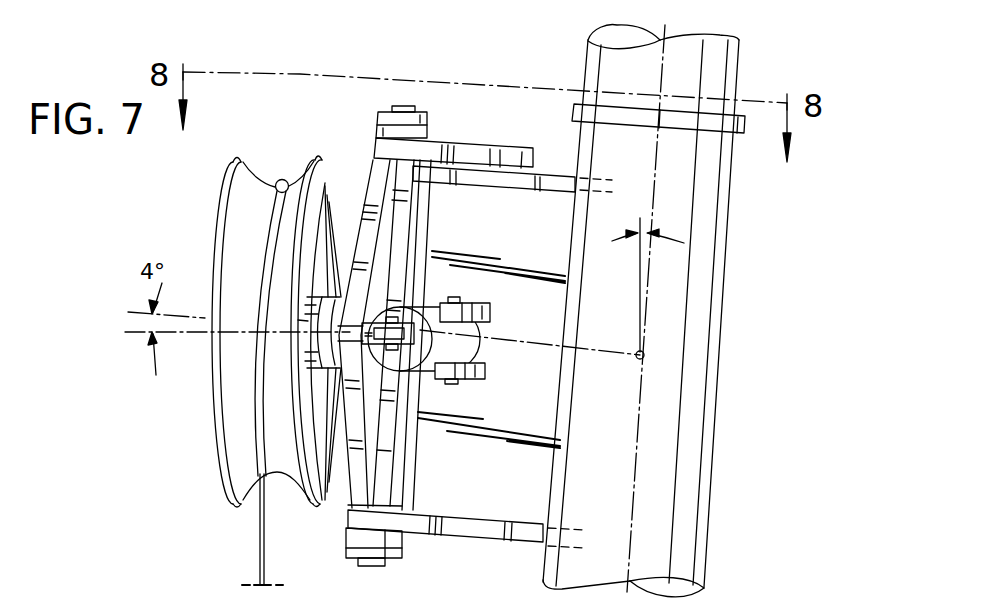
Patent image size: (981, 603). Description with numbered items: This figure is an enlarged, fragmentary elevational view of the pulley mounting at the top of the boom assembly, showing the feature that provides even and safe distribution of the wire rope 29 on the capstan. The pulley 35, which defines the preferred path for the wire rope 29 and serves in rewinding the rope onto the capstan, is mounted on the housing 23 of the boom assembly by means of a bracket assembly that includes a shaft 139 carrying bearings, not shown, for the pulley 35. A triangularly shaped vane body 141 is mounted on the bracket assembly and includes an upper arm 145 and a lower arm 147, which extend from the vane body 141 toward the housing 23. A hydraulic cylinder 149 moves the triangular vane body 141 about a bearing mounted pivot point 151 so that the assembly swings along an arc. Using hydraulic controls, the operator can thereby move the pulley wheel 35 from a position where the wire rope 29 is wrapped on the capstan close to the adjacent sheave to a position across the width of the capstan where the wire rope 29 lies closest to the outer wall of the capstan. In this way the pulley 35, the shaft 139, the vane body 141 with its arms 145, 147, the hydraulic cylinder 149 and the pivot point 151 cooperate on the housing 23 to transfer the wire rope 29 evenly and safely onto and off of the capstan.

The housing 23 is at (780, 221).
The wire rope 29 is at (258, 541).
The pulley 35 is at (222, 196).
The shaft 139 is at (339, 218).
The triangularly shaped vane body 141 is at (380, 243).
The upper arm 145 is at (465, 160).
The lower arm 147 is at (450, 530).
The hydraulic cylinder 149 is at (475, 336).
The bearing mounted pivot point 151 is at (402, 106).